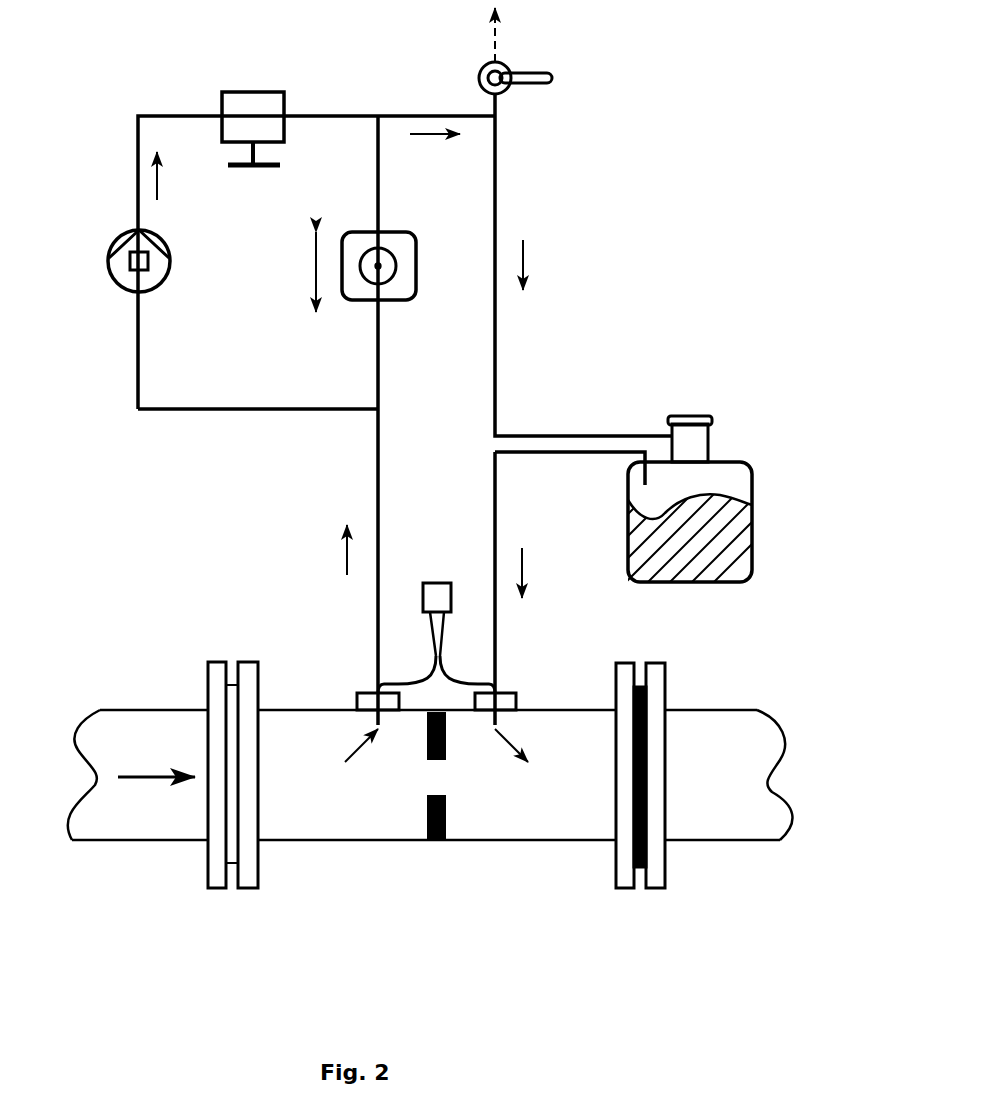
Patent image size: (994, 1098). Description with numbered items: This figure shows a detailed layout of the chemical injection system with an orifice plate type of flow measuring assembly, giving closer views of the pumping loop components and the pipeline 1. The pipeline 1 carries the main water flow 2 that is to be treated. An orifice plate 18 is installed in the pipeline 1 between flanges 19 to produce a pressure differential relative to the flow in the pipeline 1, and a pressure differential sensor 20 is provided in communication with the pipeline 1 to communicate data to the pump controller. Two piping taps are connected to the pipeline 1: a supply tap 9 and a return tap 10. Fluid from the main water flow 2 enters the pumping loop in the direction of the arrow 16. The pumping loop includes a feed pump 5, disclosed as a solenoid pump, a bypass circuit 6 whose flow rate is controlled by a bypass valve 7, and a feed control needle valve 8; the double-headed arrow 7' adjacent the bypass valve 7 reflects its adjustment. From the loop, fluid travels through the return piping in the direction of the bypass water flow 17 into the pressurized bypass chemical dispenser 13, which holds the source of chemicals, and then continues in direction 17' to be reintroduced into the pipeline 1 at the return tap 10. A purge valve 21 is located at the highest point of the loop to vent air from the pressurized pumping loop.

The pipeline 1 is at (130, 840).
The main water flow 2 is at (130, 772).
The feed pump 5 is at (102, 264).
The bypass circuit 6 is at (372, 170).
The bypass valve 7 is at (475, 295).
The sensor movement 7' is at (271, 277).
The feed control needle valve 8 is at (220, 92).
The supply tap 9 is at (500, 688).
The return tap 10 is at (357, 692).
The bypass chemical dispenser 13 is at (750, 468).
The arrow 16 is at (343, 558).
The bypass water flow 17 is at (620, 265).
The flow direction to pipe 17' is at (677, 599).
The orifice plate 18 is at (432, 840).
The flanges 19 is at (215, 890).
The pressure differential sensor 20 is at (416, 606).
The purge valve 21 is at (505, 93).